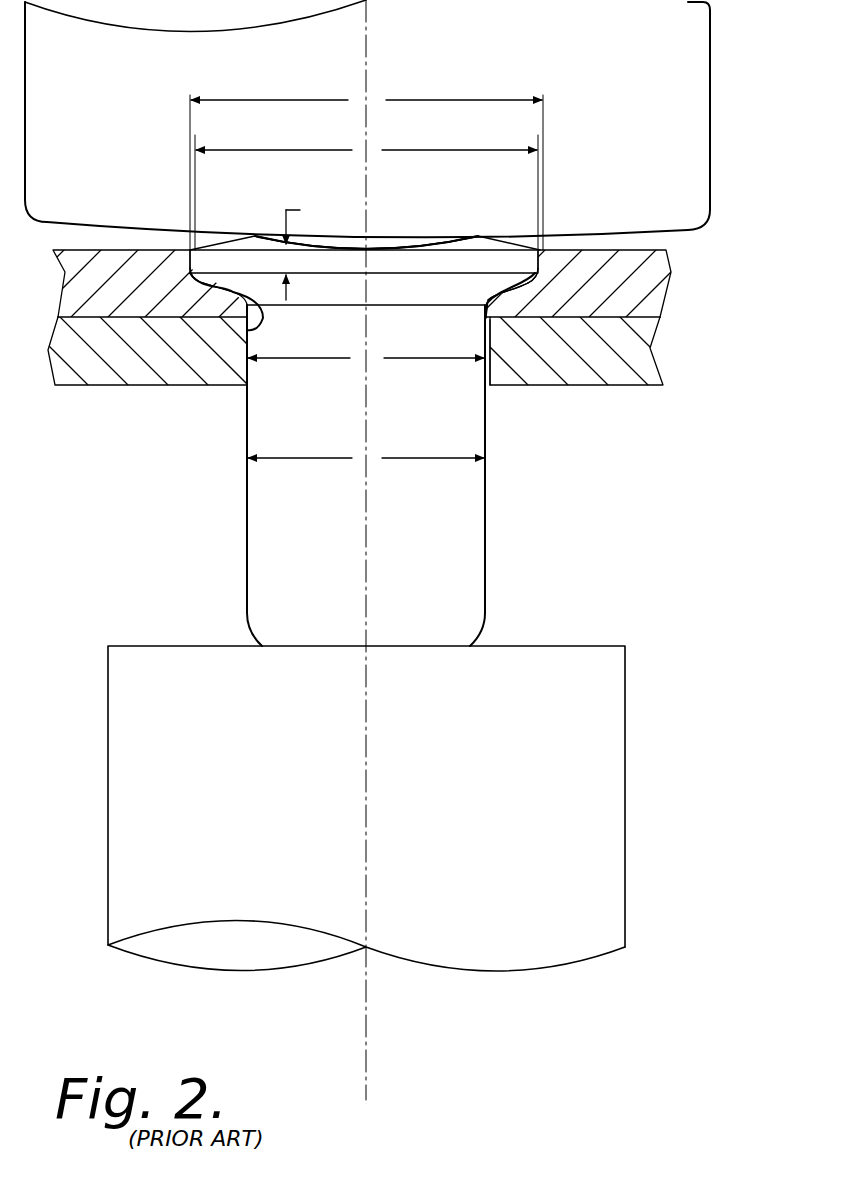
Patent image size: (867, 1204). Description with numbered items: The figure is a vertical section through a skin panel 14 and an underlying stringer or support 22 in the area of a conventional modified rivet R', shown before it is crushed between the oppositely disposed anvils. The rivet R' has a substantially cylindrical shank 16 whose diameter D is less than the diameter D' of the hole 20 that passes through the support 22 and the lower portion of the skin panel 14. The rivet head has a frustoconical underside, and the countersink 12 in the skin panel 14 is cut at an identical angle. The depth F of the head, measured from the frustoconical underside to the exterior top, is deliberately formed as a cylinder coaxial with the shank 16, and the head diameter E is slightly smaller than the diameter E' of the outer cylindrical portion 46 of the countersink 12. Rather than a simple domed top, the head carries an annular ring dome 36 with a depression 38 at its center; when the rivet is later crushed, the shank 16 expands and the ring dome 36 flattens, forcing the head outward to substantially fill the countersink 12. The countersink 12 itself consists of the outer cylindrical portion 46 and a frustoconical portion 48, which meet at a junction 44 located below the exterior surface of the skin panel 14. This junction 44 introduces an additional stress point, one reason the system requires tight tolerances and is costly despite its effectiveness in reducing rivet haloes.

The countersink 12 is at (245, 324).
The skin panel 14 is at (660, 283).
The shank 16 is at (471, 560).
The hole 20 is at (486, 372).
The stringer or underlying support 22 is at (636, 352).
The ring dome 36 is at (483, 240).
The depression 38 is at (383, 247).
The junction 44 is at (520, 280).
The outer cylindrical portion of the countersink 46 is at (548, 262).
The frustoconical portion of the countersink 48 is at (540, 293).
The depth of the rivet head F is at (301, 248).
The diameter of the rivet head E is at (366, 192).
The diameter of the outer cylindrical portion of the countersink E' is at (366, 168).
The diameter of the shank D is at (366, 459).
The diameter of the hole D' is at (366, 359).
The modified rivet R' is at (148, 491).